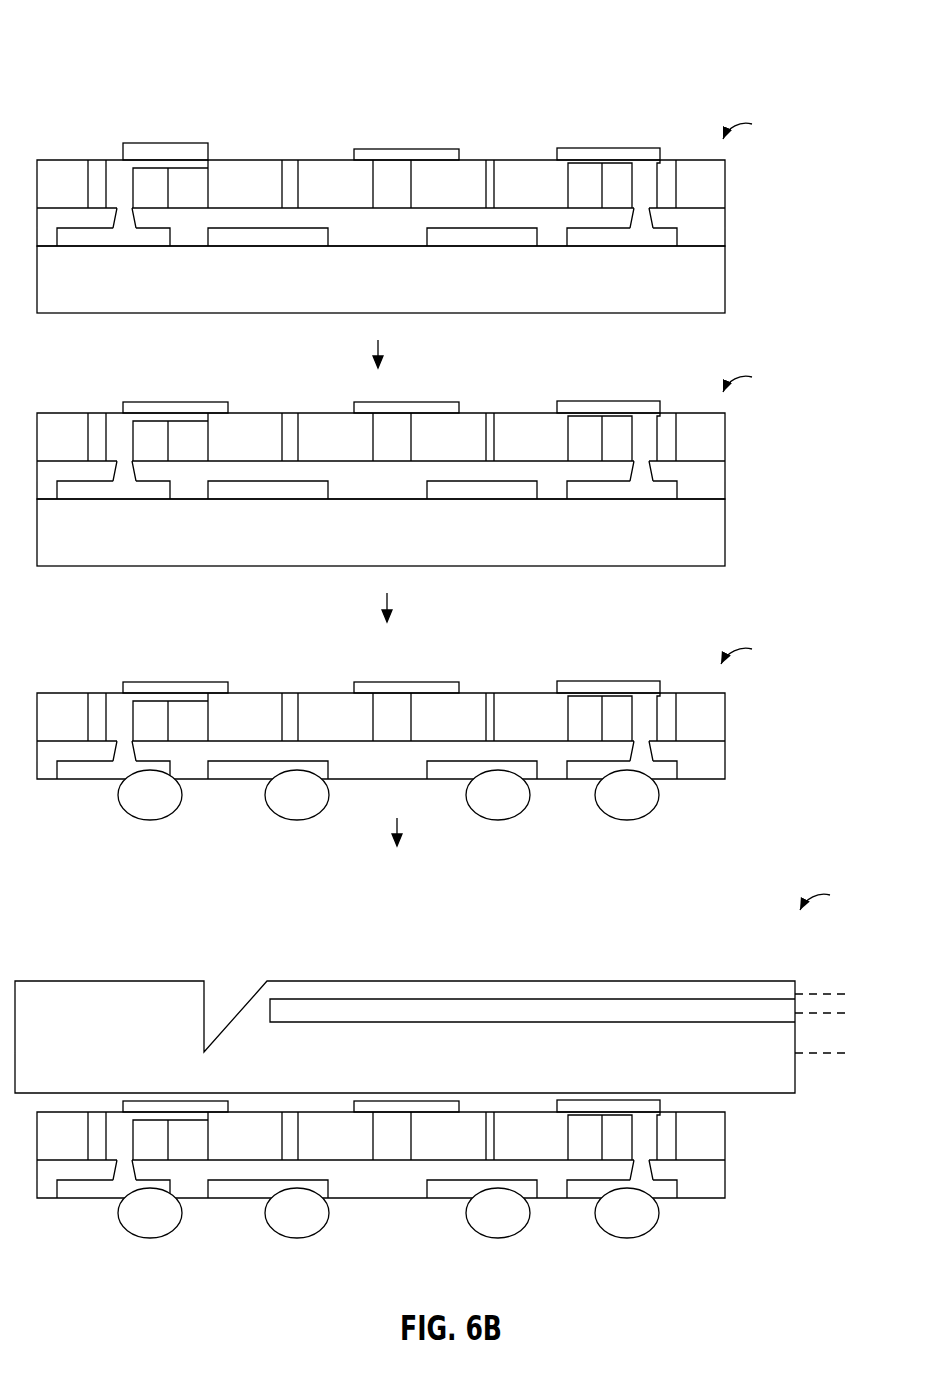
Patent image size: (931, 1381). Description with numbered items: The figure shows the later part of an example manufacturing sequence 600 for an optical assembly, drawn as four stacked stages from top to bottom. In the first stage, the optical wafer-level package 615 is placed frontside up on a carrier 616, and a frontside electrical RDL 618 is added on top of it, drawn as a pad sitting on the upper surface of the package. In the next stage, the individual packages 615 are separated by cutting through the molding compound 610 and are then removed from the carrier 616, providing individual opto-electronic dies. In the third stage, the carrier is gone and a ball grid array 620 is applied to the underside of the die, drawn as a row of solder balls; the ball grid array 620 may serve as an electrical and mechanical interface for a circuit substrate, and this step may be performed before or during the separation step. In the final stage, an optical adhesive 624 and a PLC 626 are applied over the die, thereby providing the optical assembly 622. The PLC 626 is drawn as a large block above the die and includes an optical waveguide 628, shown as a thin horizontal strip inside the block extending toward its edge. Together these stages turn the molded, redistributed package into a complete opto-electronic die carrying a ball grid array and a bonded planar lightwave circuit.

The semiconductor package fabrication process 600 is at (448, 633).
The molding compound 610 is at (45, 418).
The optical wafer-level package 615 is at (377, 307).
The carrier 616 is at (70, 292).
The frontside electrical RDL 618 is at (143, 153).
The ball grid array 620 is at (134, 815).
The optical assembly 622 is at (98, 1226).
The optical adhesive 624 is at (715, 1102).
The PLC 626 is at (430, 1005).
The optical waveguide 628 is at (462, 996).